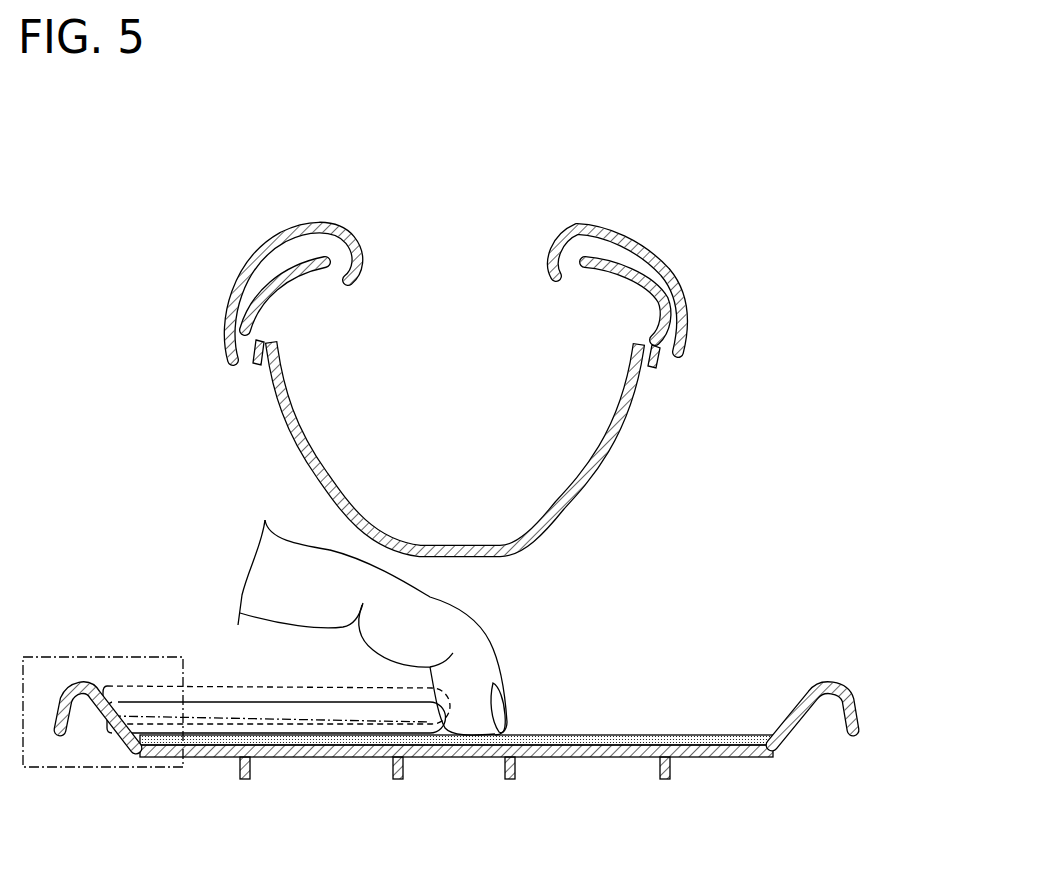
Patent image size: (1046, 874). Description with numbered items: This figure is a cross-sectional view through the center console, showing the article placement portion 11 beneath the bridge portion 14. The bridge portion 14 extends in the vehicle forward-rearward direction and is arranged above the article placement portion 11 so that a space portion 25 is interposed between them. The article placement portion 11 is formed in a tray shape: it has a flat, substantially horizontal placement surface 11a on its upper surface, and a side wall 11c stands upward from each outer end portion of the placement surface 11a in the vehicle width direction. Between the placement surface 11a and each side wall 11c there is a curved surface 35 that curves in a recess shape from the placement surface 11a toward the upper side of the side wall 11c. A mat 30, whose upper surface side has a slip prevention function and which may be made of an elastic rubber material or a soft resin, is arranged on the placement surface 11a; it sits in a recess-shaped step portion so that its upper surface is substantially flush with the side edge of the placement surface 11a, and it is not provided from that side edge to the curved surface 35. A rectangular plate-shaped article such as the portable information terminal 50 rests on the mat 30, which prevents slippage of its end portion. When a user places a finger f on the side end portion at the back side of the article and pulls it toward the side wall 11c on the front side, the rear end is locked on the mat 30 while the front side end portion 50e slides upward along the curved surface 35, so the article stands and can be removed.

The bridge portion 14 is at (625, 420).
The space portion 25 is at (507, 605).
The finger f is at (495, 653).
The portable information terminal 50 is at (268, 632).
The side end portion 50e is at (107, 686).
The article placement portion 11 is at (467, 722).
The placement surface 11a is at (610, 740).
The side wall 11c is at (77, 683).
The mat 30 is at (713, 737).
The curved surface 35 is at (106, 728).